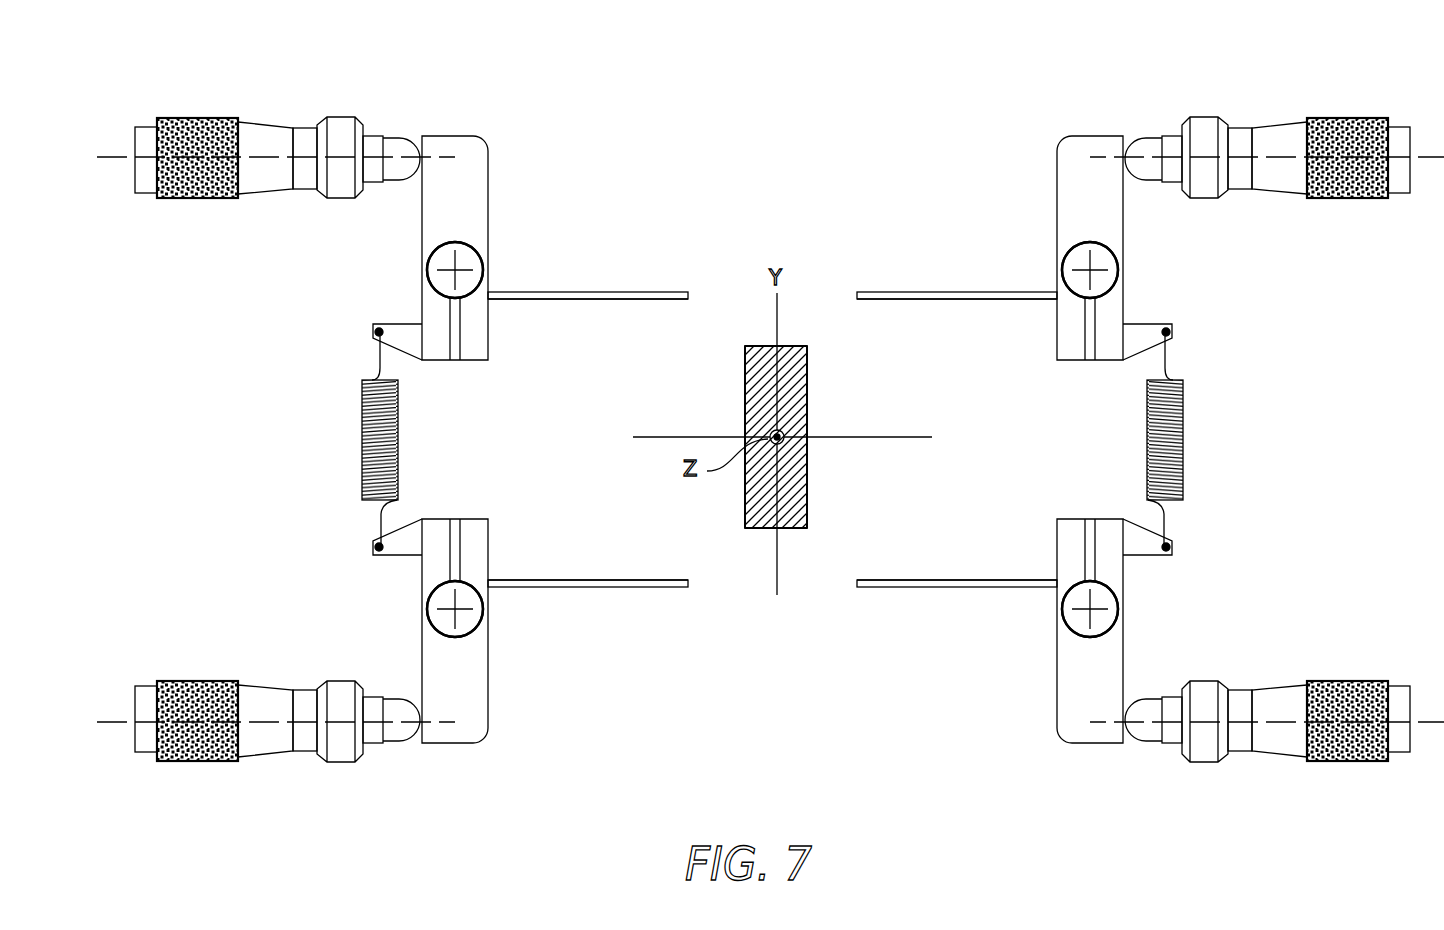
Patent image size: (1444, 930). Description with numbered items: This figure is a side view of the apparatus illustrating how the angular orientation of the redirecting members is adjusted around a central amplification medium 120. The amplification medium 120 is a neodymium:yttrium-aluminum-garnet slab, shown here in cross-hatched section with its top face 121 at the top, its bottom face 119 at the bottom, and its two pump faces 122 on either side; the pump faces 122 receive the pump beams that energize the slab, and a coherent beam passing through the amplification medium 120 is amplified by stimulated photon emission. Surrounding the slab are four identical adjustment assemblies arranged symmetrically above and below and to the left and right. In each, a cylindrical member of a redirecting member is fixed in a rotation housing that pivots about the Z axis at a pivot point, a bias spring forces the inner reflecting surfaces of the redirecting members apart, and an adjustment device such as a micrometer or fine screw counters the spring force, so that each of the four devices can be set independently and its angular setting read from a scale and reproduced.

The bottom face 119 is at (760, 528).
The amplification medium 120 is at (793, 551).
The top face 121 is at (755, 346).
The pump faces 122 is at (745, 393).